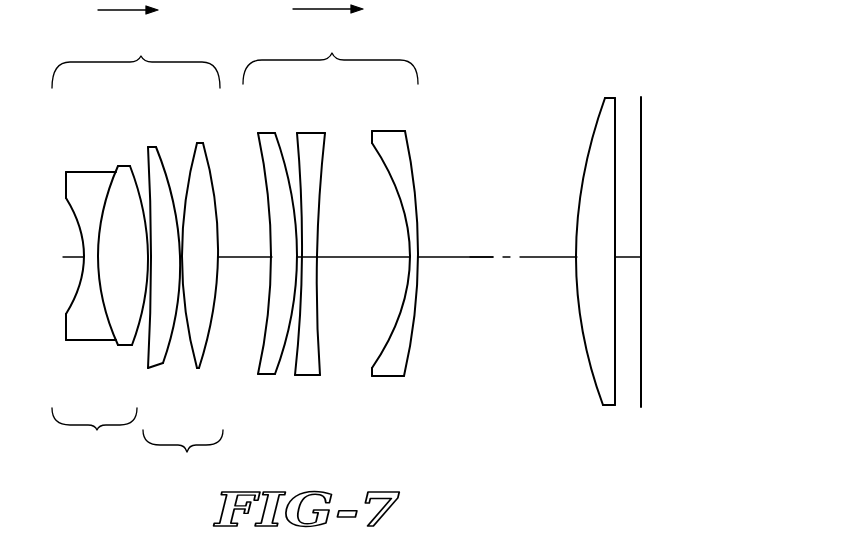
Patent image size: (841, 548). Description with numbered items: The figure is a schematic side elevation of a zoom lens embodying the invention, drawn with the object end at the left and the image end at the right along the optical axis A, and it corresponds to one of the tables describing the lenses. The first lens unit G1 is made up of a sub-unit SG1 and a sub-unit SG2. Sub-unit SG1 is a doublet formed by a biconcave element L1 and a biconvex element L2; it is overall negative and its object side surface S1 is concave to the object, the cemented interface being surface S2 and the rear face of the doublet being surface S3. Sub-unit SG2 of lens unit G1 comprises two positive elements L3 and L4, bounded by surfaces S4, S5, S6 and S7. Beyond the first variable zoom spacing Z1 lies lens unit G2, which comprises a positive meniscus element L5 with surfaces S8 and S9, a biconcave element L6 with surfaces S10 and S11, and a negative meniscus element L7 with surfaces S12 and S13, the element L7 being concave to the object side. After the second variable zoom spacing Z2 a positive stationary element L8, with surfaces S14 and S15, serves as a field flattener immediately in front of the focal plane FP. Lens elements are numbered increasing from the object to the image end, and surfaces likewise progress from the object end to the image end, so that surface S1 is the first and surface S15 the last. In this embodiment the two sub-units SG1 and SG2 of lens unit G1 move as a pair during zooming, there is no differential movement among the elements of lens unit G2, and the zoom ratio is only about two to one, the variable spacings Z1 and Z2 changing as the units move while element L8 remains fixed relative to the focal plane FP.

The biconcave element L1 is at (70, 234).
The biconvex element L2 is at (89, 247).
The positive element L3 is at (138, 254).
The positive element L4 is at (214, 256).
The positive meniscus element L5 is at (261, 265).
The biconcave element L6 is at (332, 251).
The negative meniscus element L7 is at (414, 229).
The positive stationary element L8 is at (623, 238).
The object side surface S1 is at (82, 270).
The lens surface S2 is at (110, 283).
The lens surface S3 is at (135, 330).
The lens surface S4 is at (147, 356).
The lens surface S5 is at (163, 363).
The lens surface S6 is at (196, 365).
The lens surface S7 is at (214, 325).
The lens surface S8 is at (262, 352).
The lens surface S9 is at (281, 367).
The lens surface S10 is at (296, 366).
The lens surface S11 is at (320, 337).
The lens surface S12 is at (400, 329).
The lens surface S13 is at (413, 350).
The lens surface S14 is at (587, 367).
The lens surface S15 is at (615, 375).
The first lens unit G1 is at (140, 256).
The second lens unit G2 is at (353, 237).
The first sub-unit SG1 is at (85, 293).
The second sub-unit SG2 is at (177, 292).
The variable zoom spacing Z1 is at (245, 244).
The variable zoom spacing Z2 is at (488, 242).
The optical axis A is at (542, 252).
The focal plane FP is at (642, 197).